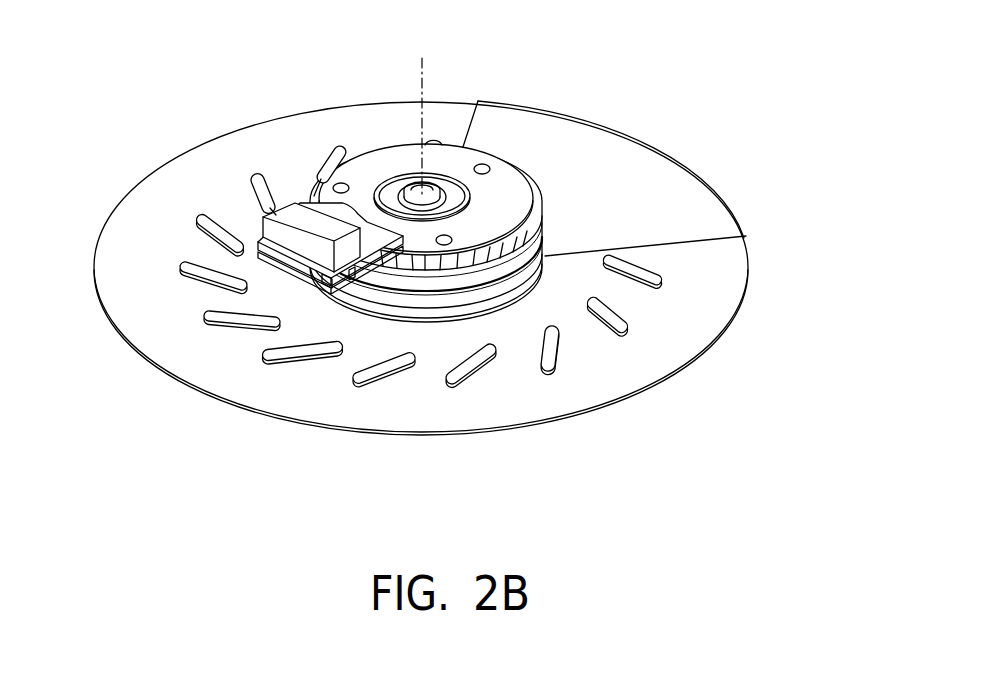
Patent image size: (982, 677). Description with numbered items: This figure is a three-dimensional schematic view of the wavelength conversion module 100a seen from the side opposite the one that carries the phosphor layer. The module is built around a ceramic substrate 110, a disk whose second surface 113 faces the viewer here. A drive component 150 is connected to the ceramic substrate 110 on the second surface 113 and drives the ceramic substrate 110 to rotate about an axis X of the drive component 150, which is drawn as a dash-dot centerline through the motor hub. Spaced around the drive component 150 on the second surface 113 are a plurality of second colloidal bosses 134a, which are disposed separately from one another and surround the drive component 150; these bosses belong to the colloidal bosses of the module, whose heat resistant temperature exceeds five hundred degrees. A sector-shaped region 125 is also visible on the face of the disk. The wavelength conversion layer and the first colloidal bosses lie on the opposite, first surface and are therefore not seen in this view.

The wavelength conversion module 100a is at (460, 281).
The ceramic substrate 110 is at (697, 298).
The second surface 113 is at (514, 394).
The cover plate sector 125 is at (575, 152).
The second colloidal bosses 134a is at (618, 325).
The drive component 150 is at (432, 293).